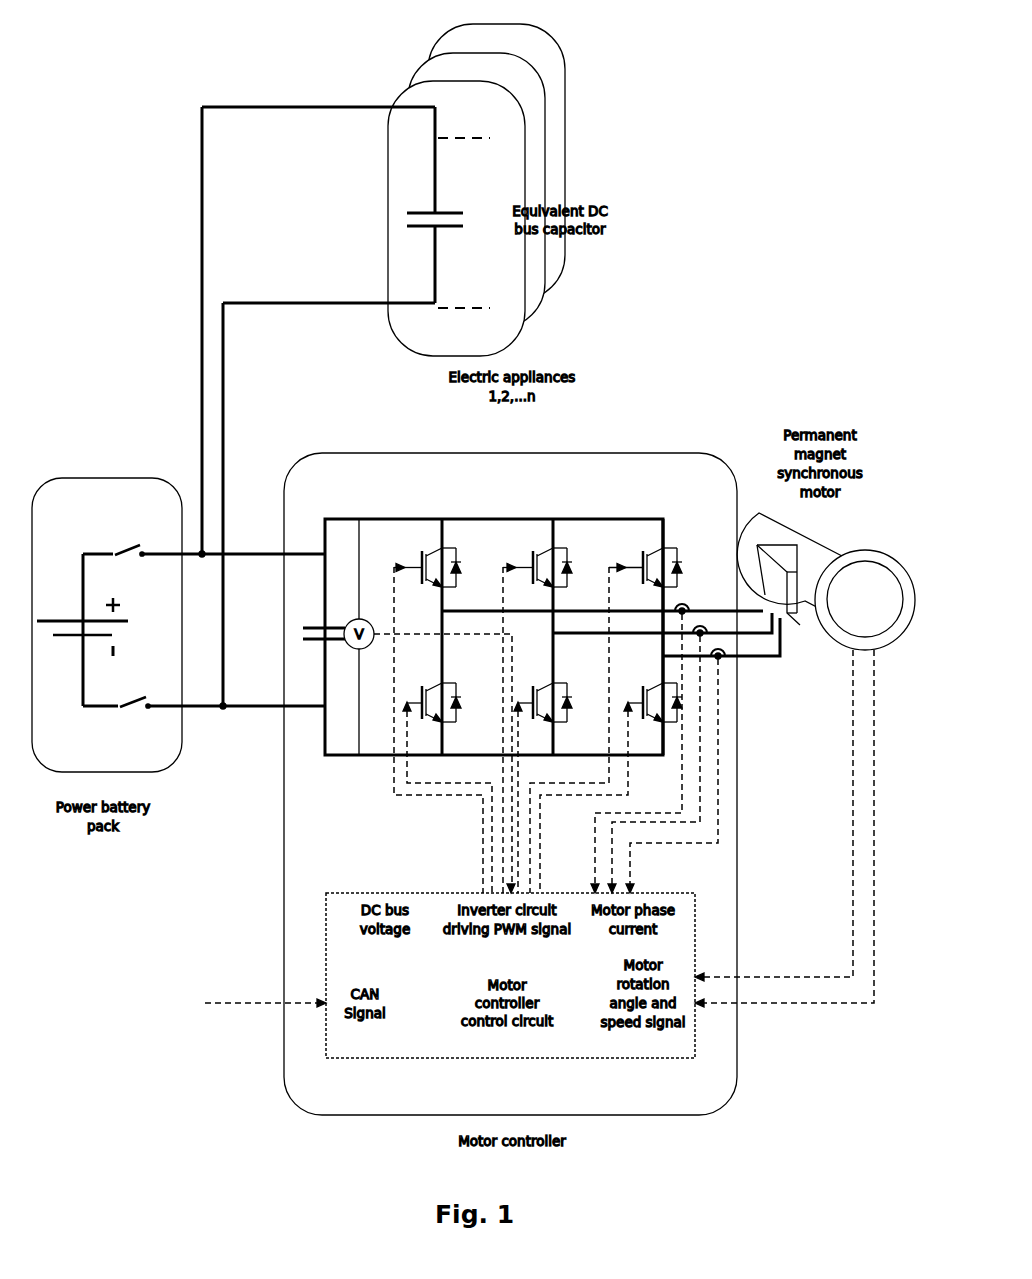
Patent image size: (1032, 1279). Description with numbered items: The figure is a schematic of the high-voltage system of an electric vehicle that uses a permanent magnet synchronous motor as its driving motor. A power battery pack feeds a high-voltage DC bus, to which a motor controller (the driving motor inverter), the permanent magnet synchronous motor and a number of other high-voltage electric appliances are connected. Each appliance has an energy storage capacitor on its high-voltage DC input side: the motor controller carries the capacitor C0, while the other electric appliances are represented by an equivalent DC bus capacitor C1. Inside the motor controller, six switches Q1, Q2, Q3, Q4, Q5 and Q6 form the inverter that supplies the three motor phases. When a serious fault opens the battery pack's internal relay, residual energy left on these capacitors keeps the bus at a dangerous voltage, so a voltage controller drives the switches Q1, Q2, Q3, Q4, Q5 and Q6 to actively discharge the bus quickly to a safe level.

The switch Q1 is at (427, 561).
The switch Q2 is at (432, 695).
The switch Q3 is at (537, 561).
The switch Q4 is at (543, 695).
The switch Q5 is at (645, 561).
The switch Q6 is at (653, 695).
The energy storage capacitor C0 is at (321, 619).
The energy storage capacitor C1 is at (451, 207).